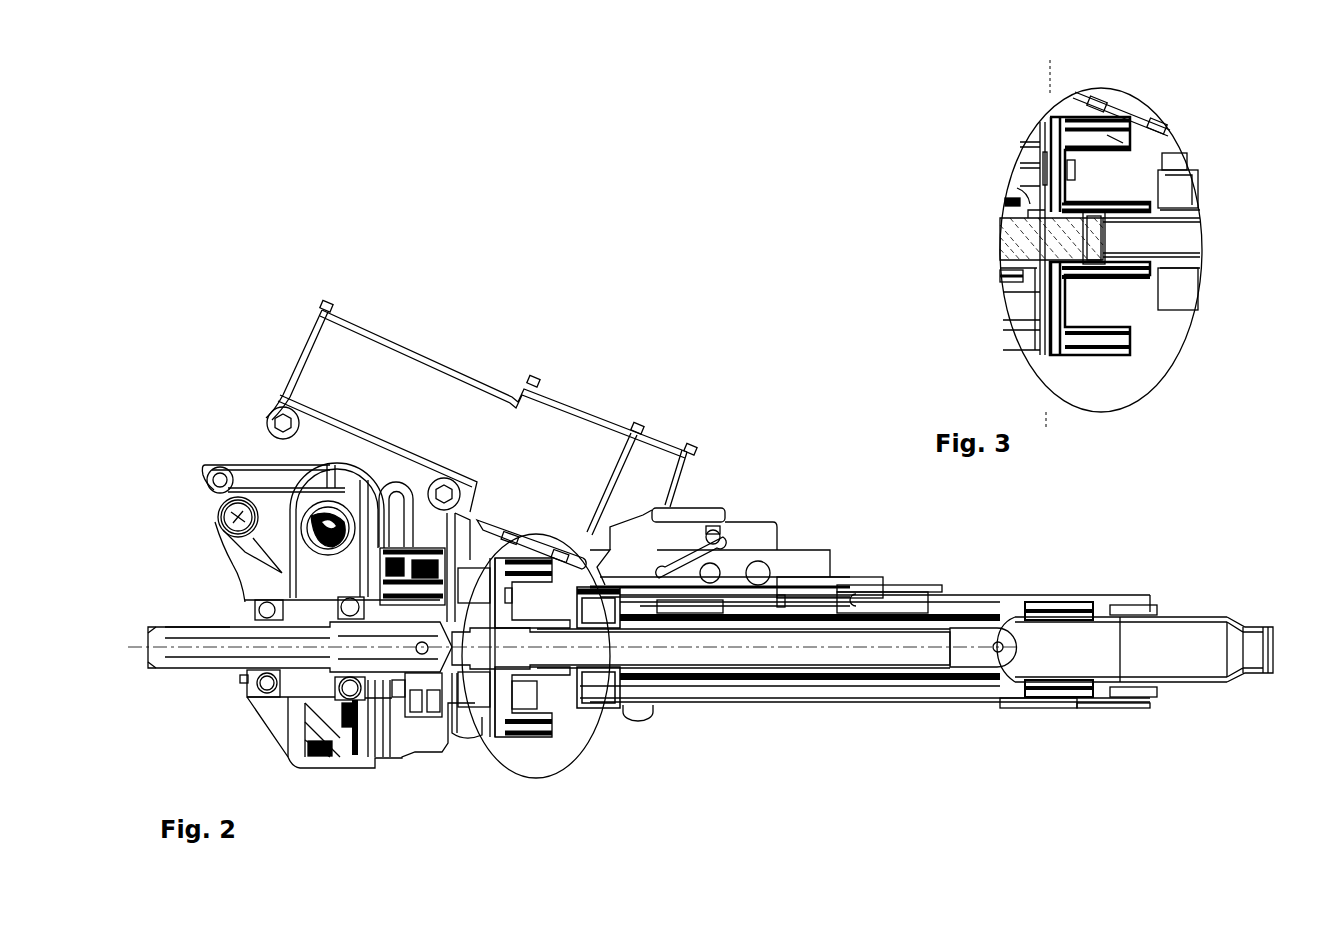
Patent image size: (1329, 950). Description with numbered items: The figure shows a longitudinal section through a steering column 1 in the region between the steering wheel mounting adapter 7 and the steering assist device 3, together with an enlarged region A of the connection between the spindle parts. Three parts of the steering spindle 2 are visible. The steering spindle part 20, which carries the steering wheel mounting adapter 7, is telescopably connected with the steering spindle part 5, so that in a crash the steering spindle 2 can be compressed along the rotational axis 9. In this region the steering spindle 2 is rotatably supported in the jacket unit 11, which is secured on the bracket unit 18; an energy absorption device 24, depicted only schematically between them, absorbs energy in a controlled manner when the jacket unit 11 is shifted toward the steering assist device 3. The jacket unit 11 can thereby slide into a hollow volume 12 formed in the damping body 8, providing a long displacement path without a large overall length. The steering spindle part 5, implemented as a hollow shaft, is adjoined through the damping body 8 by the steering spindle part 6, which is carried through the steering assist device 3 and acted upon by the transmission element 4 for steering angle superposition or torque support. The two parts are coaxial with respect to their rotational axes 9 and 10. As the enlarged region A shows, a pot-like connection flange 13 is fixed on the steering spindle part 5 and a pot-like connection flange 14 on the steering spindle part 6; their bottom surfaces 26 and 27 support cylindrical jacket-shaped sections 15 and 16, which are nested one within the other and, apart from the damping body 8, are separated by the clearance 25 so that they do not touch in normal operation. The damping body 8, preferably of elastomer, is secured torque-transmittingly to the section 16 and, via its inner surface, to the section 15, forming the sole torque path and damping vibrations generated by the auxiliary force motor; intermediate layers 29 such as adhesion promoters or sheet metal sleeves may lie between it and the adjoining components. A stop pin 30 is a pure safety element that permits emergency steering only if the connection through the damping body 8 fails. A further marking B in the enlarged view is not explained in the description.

In FIG. 2, the steering column 1 is at (700, 430).
In FIG. 2, the steering spindle 2 is at (997, 687).
In FIG. 2, the steering assist device 3 is at (343, 778).
In FIG. 2, the transmission element 4 is at (417, 717).
In FIG. 2, the steering spindle part 5 is at (887, 637).
In FIG. 3, the steering spindle part 5 is at (1207, 217).
In FIG. 2, the steering spindle part 6 is at (193, 627).
In FIG. 3, the steering spindle part 6 is at (1020, 235).
In FIG. 2, the steering wheel mounting adapter 7 is at (1257, 623).
In FIG. 2, the damping body 8 is at (540, 545).
In FIG. 3, the damping body 8 is at (1102, 122).
In FIG. 2, the rotational axis 9 is at (823, 658).
In FIG. 2, the rotational axis 10 is at (233, 667).
In FIG. 2, the jacket unit 11 is at (990, 600).
In FIG. 3, the jacket unit 11 is at (1200, 195).
In FIG. 2, the hollow volume 12 is at (592, 563).
In FIG. 3, the hollow volume 12 is at (1185, 160).
In FIG. 2, the connection flange 13 is at (560, 710).
In FIG. 3, the connection flange 13 is at (1080, 287).
In FIG. 2, the connection flange 14 is at (500, 545).
In FIG. 3, the connection flange 14 is at (1027, 298).
In FIG. 2, the cylindrical jacket-shaped section 15 is at (523, 702).
In FIG. 3, the cylindrical jacket-shaped section 15 is at (1107, 135).
In FIG. 2, the cylindrical jacket-shaped section 16 is at (517, 553).
In FIG. 3, the cylindrical jacket-shaped section 16 is at (1055, 98).
In FIG. 2, the bracket unit 18 is at (703, 505).
In FIG. 2, the steering spindle part 20 is at (1203, 673).
In FIG. 2, the energy absorption device 24 is at (713, 577).
In FIG. 3, the clearance 25 is at (1110, 237).
In FIG. 3, the bottom surface 26 is at (1023, 202).
In FIG. 3, the bottom surface 27 is at (1045, 190).
In FIG. 3, the intermediate layers 29 is at (1150, 117).
In FIG. 3, the stop pin 30 is at (1037, 133).
In FIG. 2, the enlarged region A is at (578, 772).
In FIG. 3, the section line B is at (1050, 47).